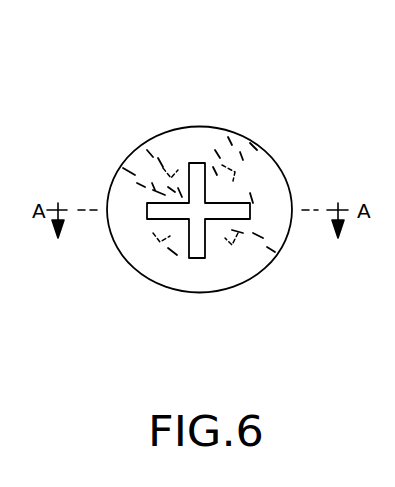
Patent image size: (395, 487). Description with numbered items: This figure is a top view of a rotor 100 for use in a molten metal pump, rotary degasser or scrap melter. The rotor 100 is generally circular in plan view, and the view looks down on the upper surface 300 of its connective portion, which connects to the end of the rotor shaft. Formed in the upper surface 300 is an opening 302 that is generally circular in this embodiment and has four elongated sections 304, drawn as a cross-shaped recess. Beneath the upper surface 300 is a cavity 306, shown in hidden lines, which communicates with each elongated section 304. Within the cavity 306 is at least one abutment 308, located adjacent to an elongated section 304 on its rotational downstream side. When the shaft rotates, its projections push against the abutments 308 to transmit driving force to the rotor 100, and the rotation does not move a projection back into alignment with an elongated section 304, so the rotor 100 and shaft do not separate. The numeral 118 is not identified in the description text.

The rotor 100 is at (202, 198).
The driver engagement location 118 is at (267, 169).
The upper surface 300 is at (199, 177).
The opening 302 is at (198, 242).
The elongated section 304 is at (208, 195).
The cavity 306 is at (238, 126).
The abutment 308 is at (134, 146).